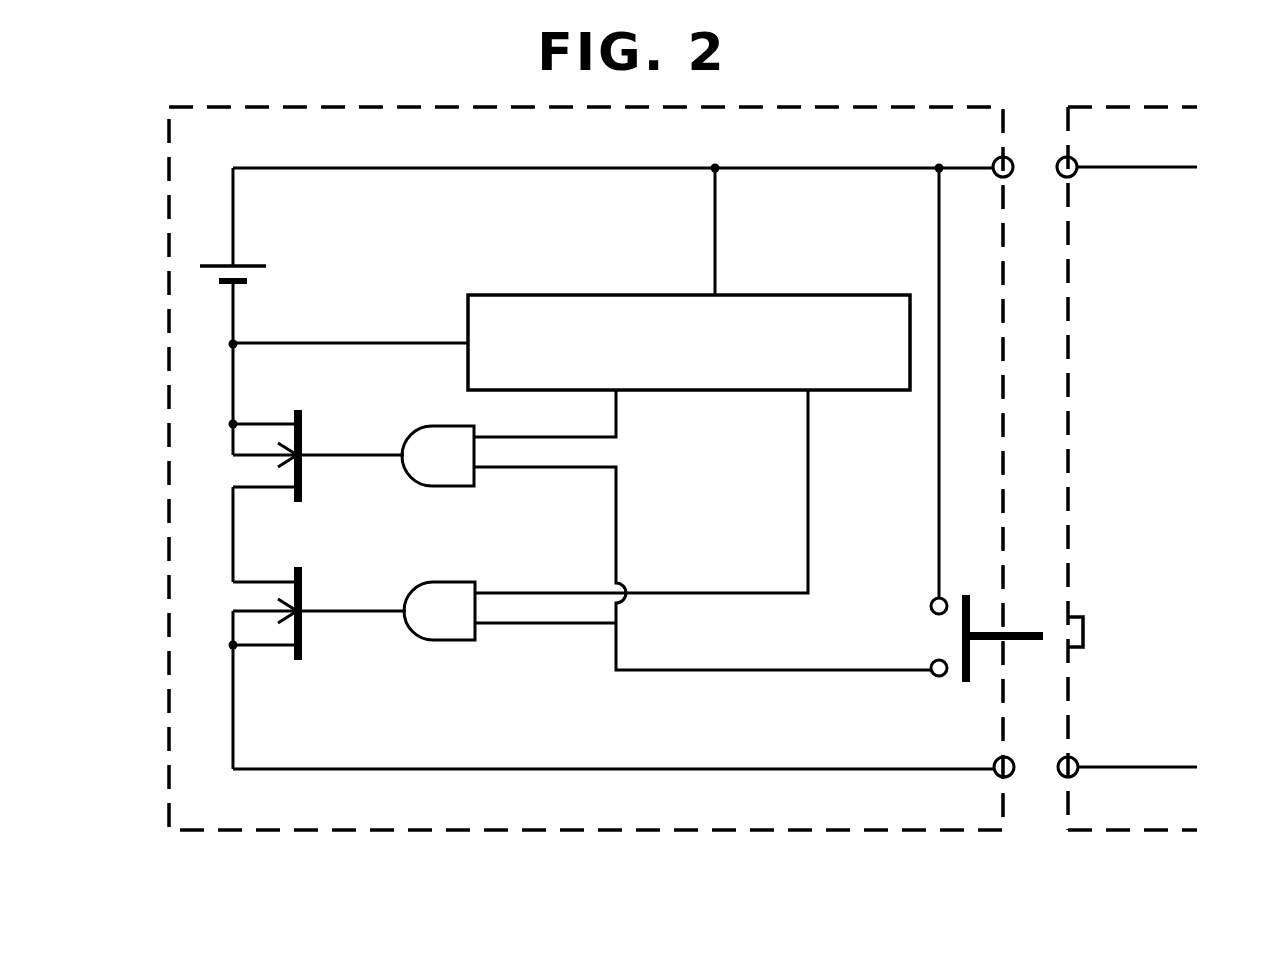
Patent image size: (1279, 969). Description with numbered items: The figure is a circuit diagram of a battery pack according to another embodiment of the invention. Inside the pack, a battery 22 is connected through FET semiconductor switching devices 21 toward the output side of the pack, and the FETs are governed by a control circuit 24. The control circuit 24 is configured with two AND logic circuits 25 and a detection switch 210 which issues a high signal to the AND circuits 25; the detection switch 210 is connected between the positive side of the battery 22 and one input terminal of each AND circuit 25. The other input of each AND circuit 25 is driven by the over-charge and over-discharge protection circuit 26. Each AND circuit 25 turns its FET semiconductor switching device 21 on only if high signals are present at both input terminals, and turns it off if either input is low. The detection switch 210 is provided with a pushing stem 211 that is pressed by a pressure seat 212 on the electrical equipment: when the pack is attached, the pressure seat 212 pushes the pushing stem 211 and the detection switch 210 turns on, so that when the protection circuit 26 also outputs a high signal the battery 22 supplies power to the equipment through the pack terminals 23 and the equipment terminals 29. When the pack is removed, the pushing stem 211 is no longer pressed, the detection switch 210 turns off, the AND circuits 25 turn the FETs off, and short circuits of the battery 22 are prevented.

The FET semiconductor switching device 21 is at (207, 610).
The battery 22 is at (258, 265).
The battery pack terminals 23 is at (1011, 158).
The control circuit 24 is at (664, 696).
The AND logic circuit 25 is at (431, 436).
The over-charge and over-discharge protection circuit 26 is at (850, 304).
The external device terminals 29 is at (1074, 174).
The detection switch 210 is at (926, 634).
The pushing stem 211 is at (1022, 630).
The pressure seat 212 is at (1100, 630).